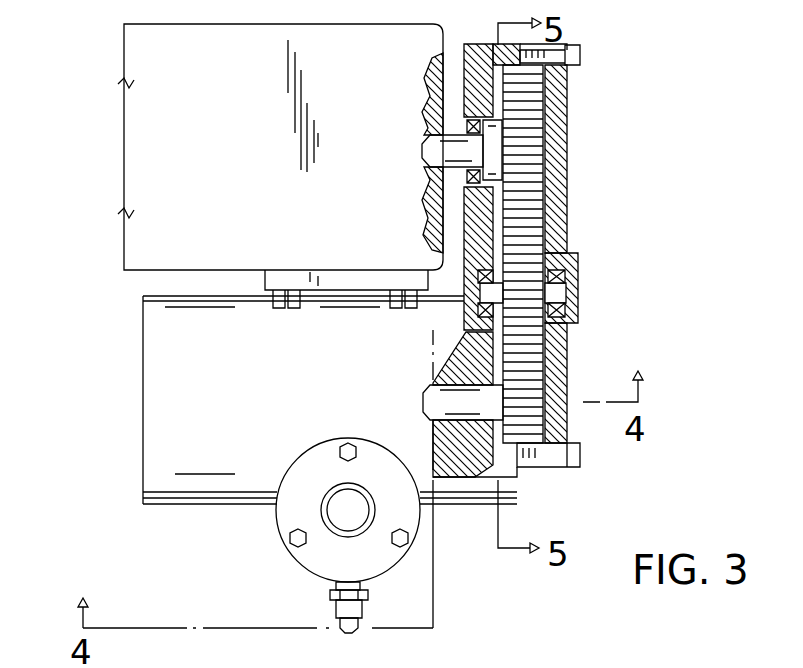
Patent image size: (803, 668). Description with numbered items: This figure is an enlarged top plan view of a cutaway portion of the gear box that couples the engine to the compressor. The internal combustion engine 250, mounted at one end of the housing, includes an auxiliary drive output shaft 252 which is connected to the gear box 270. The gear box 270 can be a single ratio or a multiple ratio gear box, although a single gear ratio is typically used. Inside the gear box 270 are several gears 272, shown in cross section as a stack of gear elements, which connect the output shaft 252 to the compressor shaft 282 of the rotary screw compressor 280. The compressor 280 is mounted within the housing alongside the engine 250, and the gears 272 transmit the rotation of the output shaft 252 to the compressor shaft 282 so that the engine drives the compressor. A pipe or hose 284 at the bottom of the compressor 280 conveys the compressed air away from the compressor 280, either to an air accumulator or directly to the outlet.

The internal combustion engine 250 is at (124, 152).
The auxiliary drive output shaft 252 is at (428, 148).
The gear box 270 is at (567, 203).
The gears 272 is at (533, 123).
The rotary screw compressor 280 is at (143, 350).
The compressor shaft 282 is at (432, 392).
The pipe or hose 284 is at (345, 625).